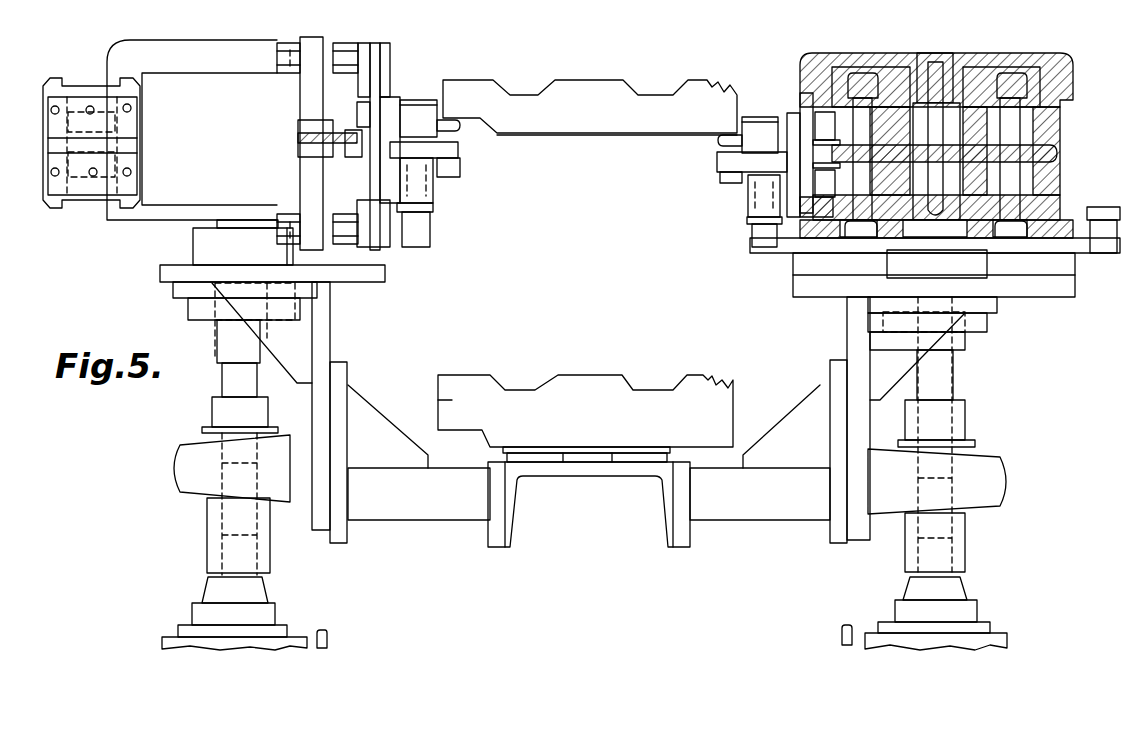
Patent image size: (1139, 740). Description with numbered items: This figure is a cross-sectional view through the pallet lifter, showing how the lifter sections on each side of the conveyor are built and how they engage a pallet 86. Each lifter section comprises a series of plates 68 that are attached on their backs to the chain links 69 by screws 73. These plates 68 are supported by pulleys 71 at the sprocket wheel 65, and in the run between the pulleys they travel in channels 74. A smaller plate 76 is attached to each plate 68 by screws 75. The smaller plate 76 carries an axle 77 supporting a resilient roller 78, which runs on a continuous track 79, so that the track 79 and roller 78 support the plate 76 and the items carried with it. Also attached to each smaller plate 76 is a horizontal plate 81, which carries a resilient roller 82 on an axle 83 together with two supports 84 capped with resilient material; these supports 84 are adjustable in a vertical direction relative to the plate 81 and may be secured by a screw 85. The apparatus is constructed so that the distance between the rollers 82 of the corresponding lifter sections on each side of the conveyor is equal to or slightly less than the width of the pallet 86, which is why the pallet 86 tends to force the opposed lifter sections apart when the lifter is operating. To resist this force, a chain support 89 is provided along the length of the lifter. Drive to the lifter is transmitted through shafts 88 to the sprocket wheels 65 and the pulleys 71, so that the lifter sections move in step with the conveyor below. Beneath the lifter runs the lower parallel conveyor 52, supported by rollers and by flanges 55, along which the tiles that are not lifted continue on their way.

The conveyor 52 is at (583, 448).
The flanges 55 is at (662, 473).
The sprocket wheel 65 is at (1040, 148).
The plates 68 is at (372, 92).
The chain links 69 is at (300, 140).
The pulleys 71 is at (1045, 98).
The screws 73 is at (814, 120).
The channels 74 is at (368, 70).
The screws 75 is at (790, 123).
The smaller plate 76 is at (383, 181).
The axle 77 is at (420, 225).
The resilient roller 78 is at (433, 187).
The continuous track 79 is at (403, 197).
The horizontal plate 81 is at (452, 182).
The resilient roller 82 is at (438, 115).
The axle 83 is at (407, 102).
The supports 84 is at (460, 132).
The screw 85 is at (458, 152).
The pallet 86 is at (575, 95).
The shafts 88 is at (228, 383).
The chain support 89 is at (297, 127).